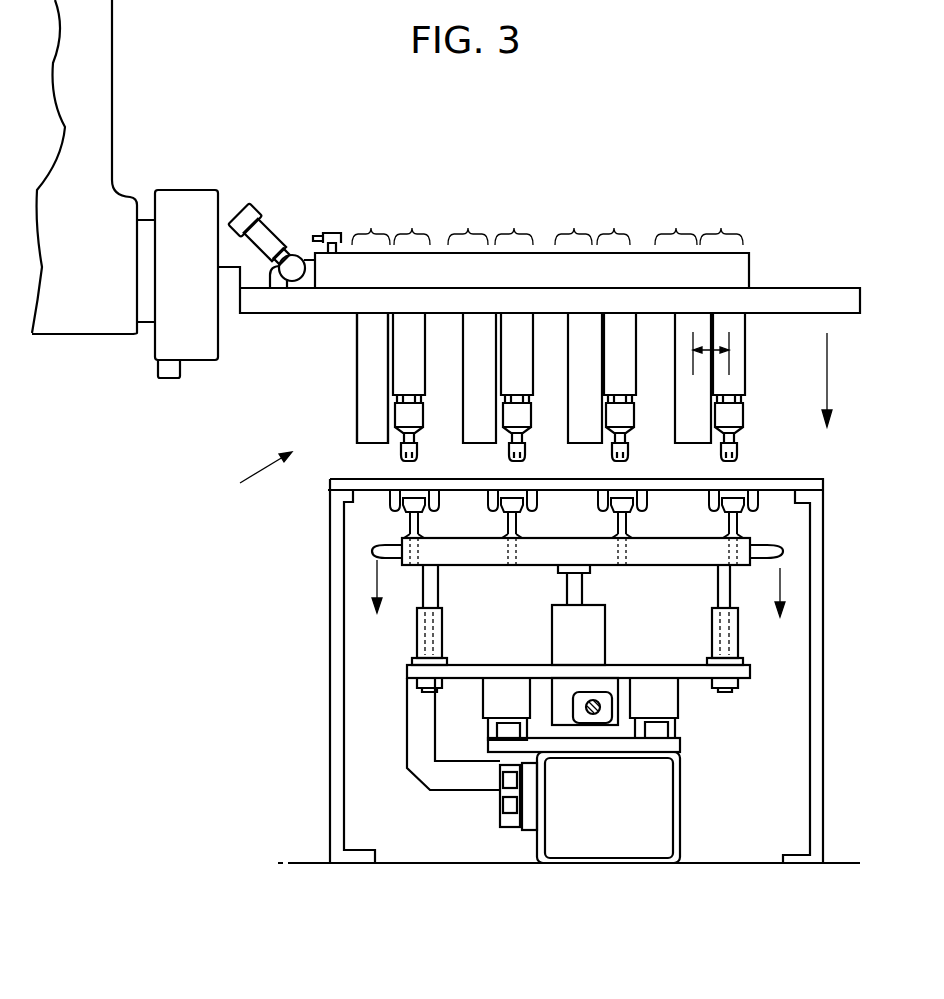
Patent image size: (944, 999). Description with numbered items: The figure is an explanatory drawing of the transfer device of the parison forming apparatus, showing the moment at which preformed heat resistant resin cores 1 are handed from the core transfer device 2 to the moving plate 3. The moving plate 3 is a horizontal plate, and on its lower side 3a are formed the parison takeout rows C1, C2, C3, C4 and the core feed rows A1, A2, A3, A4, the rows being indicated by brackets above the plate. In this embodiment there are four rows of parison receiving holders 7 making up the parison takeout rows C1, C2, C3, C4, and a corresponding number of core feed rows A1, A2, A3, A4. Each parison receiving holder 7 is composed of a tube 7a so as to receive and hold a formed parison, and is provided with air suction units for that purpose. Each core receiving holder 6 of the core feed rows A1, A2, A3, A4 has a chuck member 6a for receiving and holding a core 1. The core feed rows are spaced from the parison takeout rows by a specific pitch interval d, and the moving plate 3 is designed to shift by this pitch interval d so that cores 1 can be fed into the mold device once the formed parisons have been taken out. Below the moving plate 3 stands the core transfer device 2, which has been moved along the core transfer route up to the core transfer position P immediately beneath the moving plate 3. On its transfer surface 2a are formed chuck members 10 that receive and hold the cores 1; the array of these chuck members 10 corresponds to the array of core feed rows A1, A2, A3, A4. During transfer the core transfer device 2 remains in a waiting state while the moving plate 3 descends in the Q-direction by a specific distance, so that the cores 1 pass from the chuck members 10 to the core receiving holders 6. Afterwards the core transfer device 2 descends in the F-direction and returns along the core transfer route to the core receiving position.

The core 1 is at (408, 513).
The core transfer device 2 is at (751, 546).
The transfer surface 2a is at (578, 539).
The moving plate 3 is at (829, 288).
The lower side 3a is at (812, 316).
The core receiving holder 6 is at (508, 410).
The chuck member 6a is at (740, 452).
The parison receiving holder 7 is at (355, 424).
The tube 7a is at (370, 381).
The chuck member 10 is at (506, 516).
The pitch interval d is at (708, 349).
The core transfer position P is at (254, 474).
The Q-direction Q is at (822, 380).
The F-direction F is at (779, 588).
The parison takeout row C4 is at (371, 222).
The core feed row A4 is at (412, 222).
The parison takeout row C3 is at (468, 222).
The core feed row A3 is at (514, 222).
The parison takeout row C2 is at (573, 222).
The core feed row A2 is at (613, 222).
The parison takeout row C1 is at (676, 222).
The core feed row A1 is at (721, 222).